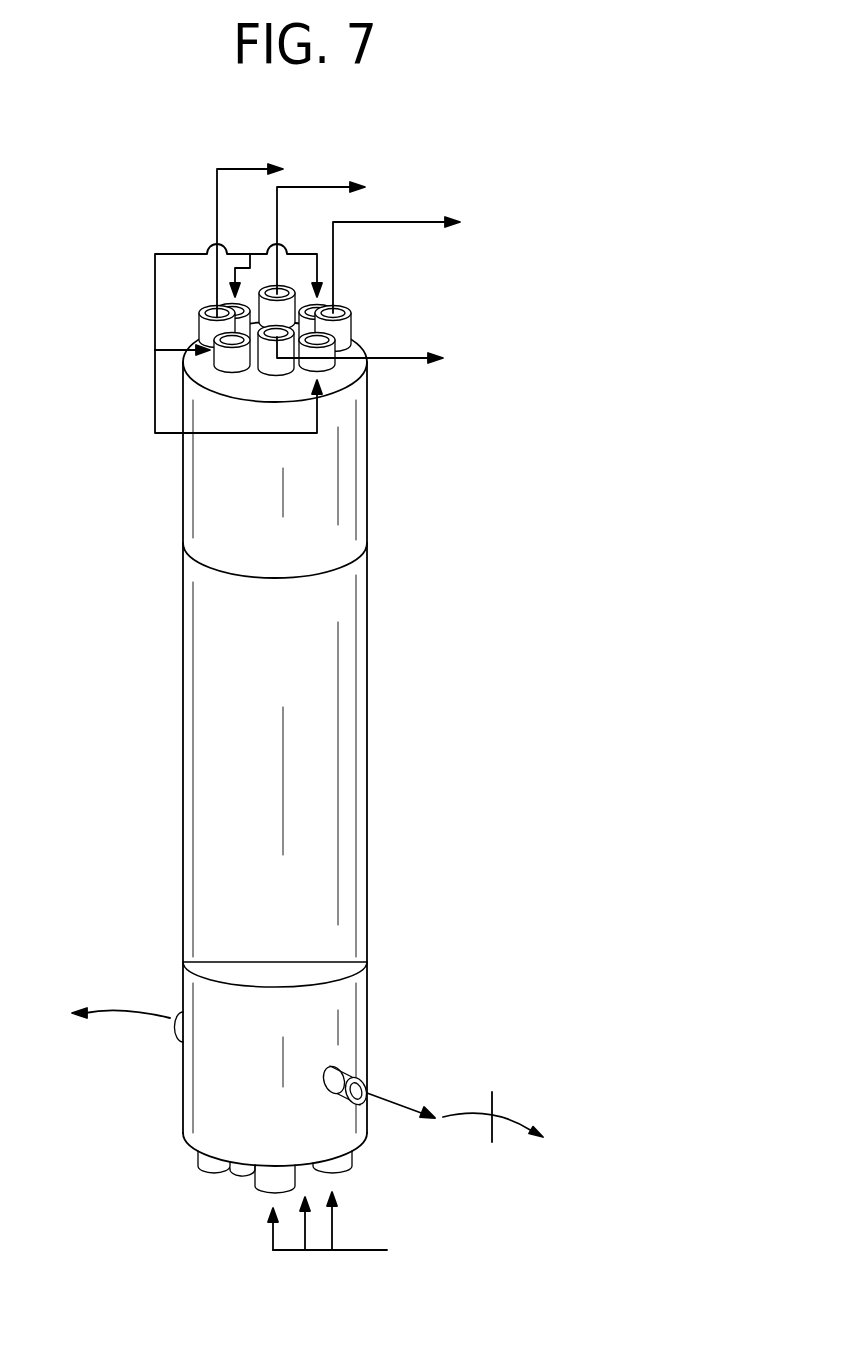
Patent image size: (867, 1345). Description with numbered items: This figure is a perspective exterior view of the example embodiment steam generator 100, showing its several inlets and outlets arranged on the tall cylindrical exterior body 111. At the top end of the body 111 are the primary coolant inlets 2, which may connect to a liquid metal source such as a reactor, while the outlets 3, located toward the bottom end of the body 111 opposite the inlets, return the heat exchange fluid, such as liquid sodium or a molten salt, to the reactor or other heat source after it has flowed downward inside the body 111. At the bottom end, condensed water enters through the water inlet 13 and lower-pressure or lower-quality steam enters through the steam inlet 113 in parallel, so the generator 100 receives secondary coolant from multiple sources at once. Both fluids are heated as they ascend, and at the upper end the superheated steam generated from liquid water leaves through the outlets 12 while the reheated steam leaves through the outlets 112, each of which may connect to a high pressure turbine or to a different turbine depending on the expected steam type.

The steam generator 100 is at (503, 670).
The exterior body 111 is at (205, 789).
The outlets 112 is at (277, 223).
The steam inlet 113 is at (203, 1190).
The outlets 12 is at (387, 222).
The water inlet 13 is at (332, 1232).
The primary coolant inlets 2 is at (172, 352).
The outlets 3 is at (138, 1020).